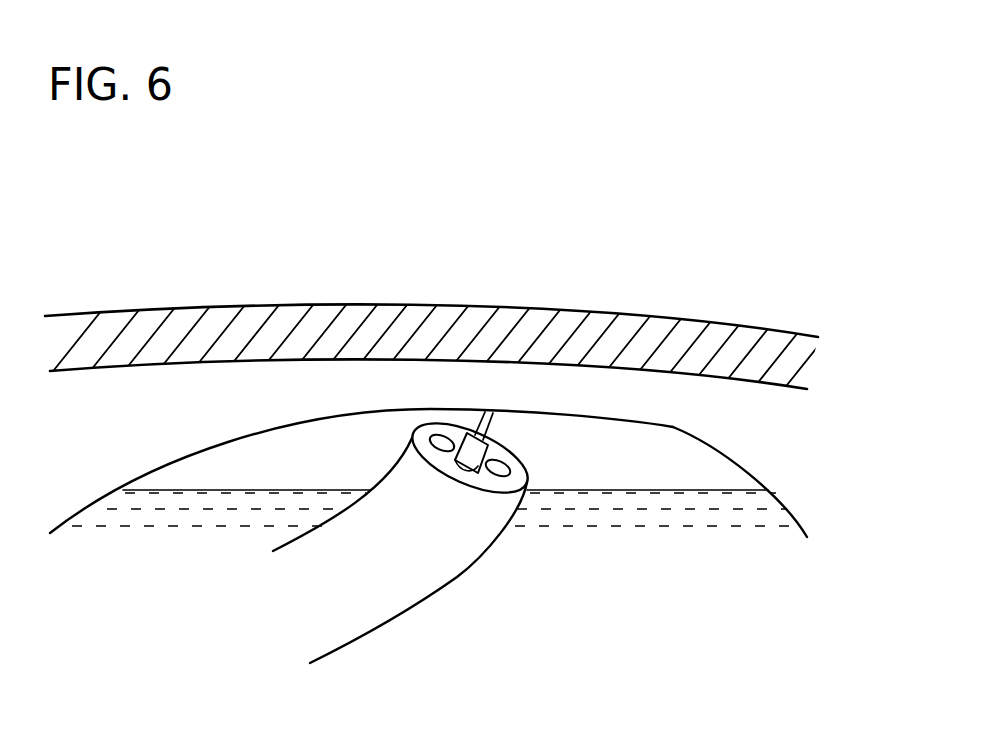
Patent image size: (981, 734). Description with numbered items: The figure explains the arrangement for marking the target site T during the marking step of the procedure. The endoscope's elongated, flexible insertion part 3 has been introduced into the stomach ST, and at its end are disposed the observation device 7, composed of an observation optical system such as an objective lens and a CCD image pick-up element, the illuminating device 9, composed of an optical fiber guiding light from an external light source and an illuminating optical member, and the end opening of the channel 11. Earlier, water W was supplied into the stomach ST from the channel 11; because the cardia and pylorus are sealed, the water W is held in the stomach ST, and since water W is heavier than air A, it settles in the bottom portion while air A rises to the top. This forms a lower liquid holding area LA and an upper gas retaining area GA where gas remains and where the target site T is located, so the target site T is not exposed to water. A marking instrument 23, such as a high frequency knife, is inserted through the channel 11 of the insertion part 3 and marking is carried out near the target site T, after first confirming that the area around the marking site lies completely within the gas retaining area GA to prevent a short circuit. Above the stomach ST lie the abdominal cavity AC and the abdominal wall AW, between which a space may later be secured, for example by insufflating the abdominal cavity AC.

The insertion part 3 is at (404, 621).
The observation device 7 is at (511, 457).
The illuminating device 9 is at (443, 438).
The channel 11 is at (477, 490).
The marking instrument 23 is at (470, 420).
The target site T is at (500, 410).
The abdominal wall AW is at (133, 318).
The gas retaining area GA is at (307, 427).
The stomach ST is at (670, 432).
The air A is at (595, 440).
The abdominal cavity AC is at (136, 413).
The water W is at (136, 518).
The liquid holding area LA is at (188, 530).